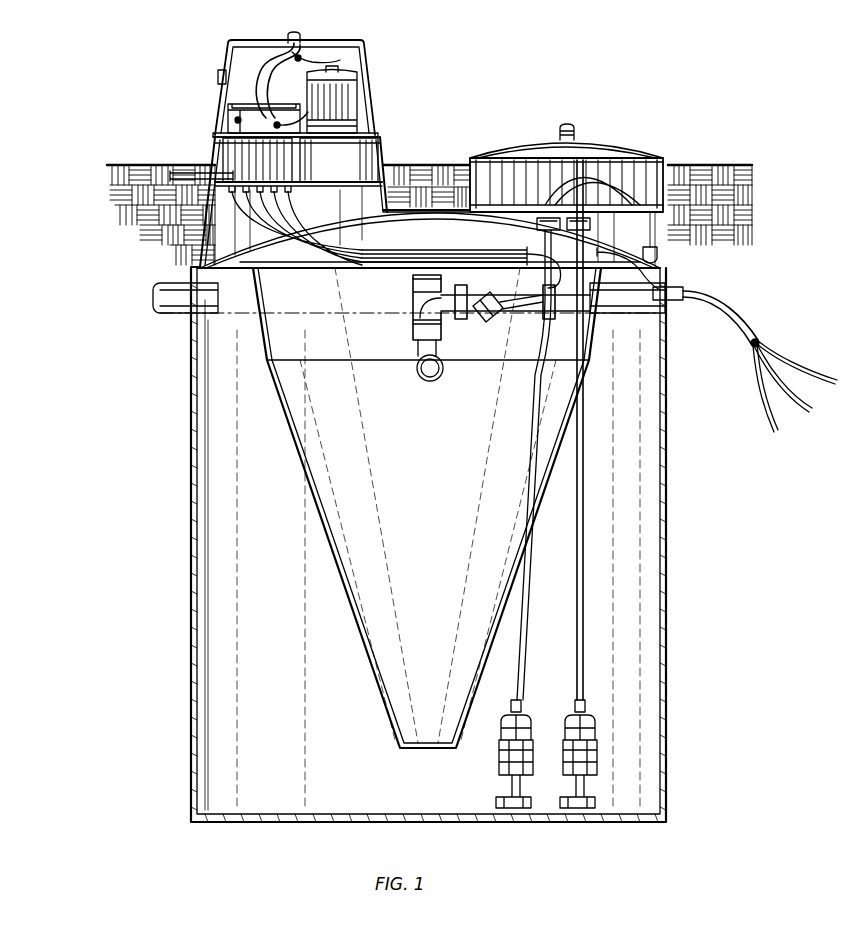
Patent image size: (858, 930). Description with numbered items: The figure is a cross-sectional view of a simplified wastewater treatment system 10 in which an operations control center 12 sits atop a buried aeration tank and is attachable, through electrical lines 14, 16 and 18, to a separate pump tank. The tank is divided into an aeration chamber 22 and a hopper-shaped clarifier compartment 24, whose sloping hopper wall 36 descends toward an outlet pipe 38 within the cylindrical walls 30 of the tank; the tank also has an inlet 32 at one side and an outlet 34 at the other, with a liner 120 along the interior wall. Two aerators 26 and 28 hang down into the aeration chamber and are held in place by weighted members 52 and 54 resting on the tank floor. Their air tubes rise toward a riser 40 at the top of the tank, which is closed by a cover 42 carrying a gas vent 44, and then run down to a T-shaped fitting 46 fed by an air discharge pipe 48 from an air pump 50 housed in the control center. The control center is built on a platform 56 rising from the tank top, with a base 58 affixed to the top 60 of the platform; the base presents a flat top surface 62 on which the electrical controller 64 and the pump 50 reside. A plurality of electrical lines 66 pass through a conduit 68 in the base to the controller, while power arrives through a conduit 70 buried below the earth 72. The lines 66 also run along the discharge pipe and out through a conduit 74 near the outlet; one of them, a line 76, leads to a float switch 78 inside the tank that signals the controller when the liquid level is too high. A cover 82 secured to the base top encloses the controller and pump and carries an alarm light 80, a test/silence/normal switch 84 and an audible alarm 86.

The wastewater treatment system 10 is at (708, 652).
The operations control center 12 is at (385, 68).
The electrical line 14 is at (778, 364).
The electrical line 16 is at (790, 412).
The electrical line 18 is at (762, 418).
The aeration chamber 22 is at (302, 682).
The clarifier compartment 24 is at (444, 584).
The aerator 26 is at (522, 672).
The aerator 28 is at (584, 585).
The cylindrical walls 30 is at (668, 538).
The inlet 32 is at (180, 312).
The outlet 34 is at (646, 316).
The hopper wall 36 is at (327, 548).
The outlet pipe 38 is at (424, 378).
The riser 40 is at (661, 156).
The cover 42 is at (628, 147).
The gas vent 44 is at (571, 126).
The T-shaped fitting 46 is at (662, 256).
The air discharge pipe 48 is at (370, 170).
The air pump 50 is at (358, 97).
The weighted member 52 is at (500, 795).
The weighted member 54 is at (596, 795).
The platform 56 is at (208, 220).
The base 58 is at (380, 142).
The top of the platform 60 is at (298, 185).
The flat top surface 62 is at (370, 132).
The electrical controller 64 is at (240, 112).
The electrical lines 66 is at (280, 222).
The conduit 68 is at (283, 177).
The conduit 70 is at (212, 174).
The earth 72 is at (118, 164).
The conduit 74 is at (724, 300).
The line 76 is at (512, 308).
The float switch 78 is at (492, 318).
The alarm light 80 is at (291, 34).
The cover 82 is at (372, 58).
The test/silence/normal switch 84 is at (300, 52).
The audible alarm 86 is at (220, 75).
The tank liner 120 is at (198, 545).